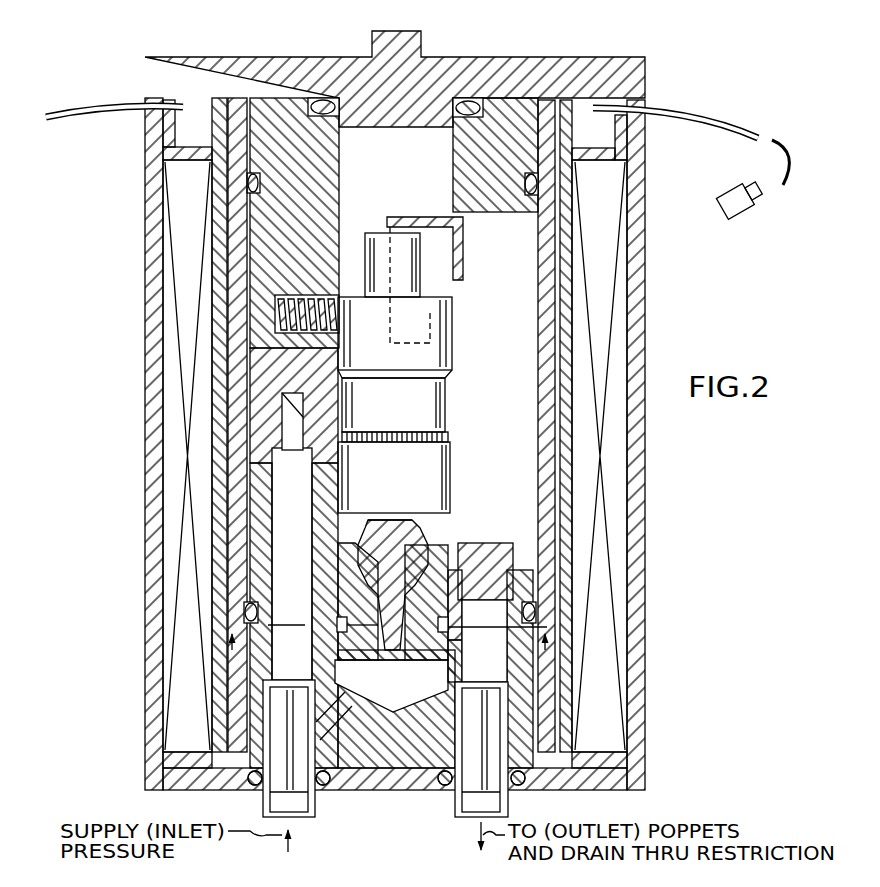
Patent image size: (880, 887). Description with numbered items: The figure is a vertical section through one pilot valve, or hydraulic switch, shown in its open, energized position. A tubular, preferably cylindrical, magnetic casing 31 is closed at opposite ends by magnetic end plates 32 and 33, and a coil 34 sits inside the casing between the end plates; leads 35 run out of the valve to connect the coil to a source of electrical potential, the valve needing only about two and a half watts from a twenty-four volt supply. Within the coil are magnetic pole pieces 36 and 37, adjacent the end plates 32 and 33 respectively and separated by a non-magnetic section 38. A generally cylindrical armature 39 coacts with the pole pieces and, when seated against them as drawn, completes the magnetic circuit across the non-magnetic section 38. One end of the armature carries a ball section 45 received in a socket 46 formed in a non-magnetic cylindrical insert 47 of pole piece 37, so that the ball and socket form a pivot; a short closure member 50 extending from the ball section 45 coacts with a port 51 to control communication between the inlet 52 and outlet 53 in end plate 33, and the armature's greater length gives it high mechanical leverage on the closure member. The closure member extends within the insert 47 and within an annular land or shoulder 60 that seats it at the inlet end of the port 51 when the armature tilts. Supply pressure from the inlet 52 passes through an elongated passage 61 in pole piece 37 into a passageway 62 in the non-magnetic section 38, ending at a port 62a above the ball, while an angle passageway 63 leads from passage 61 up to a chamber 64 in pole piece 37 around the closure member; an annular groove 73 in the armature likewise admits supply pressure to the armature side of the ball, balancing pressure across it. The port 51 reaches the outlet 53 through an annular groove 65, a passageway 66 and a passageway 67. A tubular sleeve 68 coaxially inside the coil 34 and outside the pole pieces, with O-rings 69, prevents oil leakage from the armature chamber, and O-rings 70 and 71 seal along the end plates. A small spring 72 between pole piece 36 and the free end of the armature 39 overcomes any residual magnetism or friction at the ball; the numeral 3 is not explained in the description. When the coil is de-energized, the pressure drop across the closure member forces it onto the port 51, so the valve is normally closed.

The flow arrows 3 is at (389, 612).
The tubular magnetic casing 31 is at (644, 495).
The magnetic end plate 32 is at (521, 60).
The magnetic end plate 33 is at (407, 783).
The coil 34 is at (597, 557).
The leads 35 is at (88, 104).
The magnetic pole piece 36 is at (278, 126).
The magnetic pole piece 37 is at (262, 658).
The non-magnetic section 38 is at (262, 380).
The armature 39 is at (464, 428).
The ball section 45 is at (390, 535).
The socket 46 is at (417, 513).
The cylindrical insert 47 is at (330, 557).
The closure member 50 is at (398, 665).
The port 51 is at (355, 665).
The inlet 52 is at (283, 787).
The outlet 53 is at (497, 785).
The annular land or shoulder 60 is at (413, 587).
The elongated passage 61 is at (277, 548).
The passageway 62 is at (290, 428).
The port 62a is at (292, 372).
The angle passageway 63 is at (332, 726).
The chamber 64 is at (390, 707).
The annular groove 65 is at (335, 620).
The passageway 66 is at (482, 597).
The passageway 67 is at (495, 667).
The tubular sleeve 68 is at (555, 243).
The O-rings 69 is at (538, 186).
The O-ring 70 is at (468, 98).
The O-ring 71 is at (452, 790).
The spring 72 is at (322, 300).
The annular groove 73 is at (437, 400).